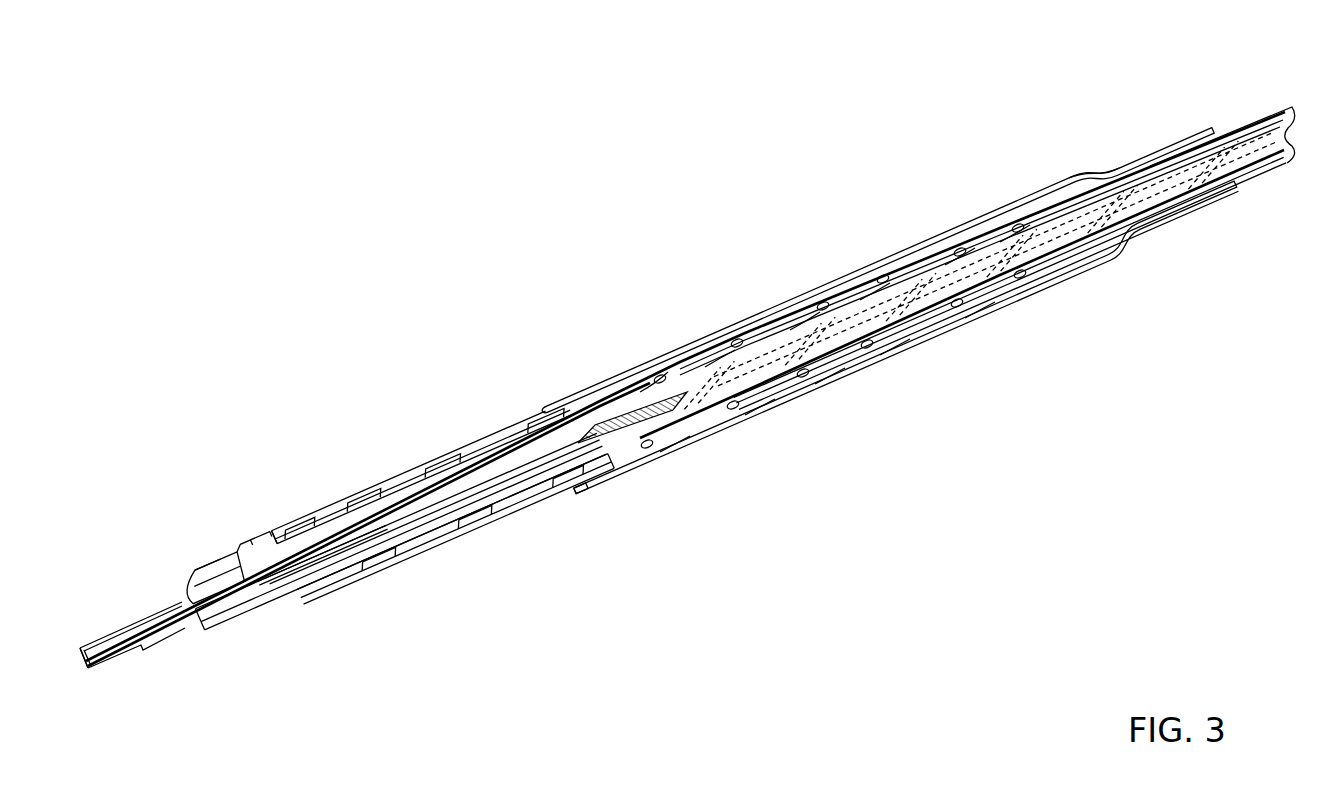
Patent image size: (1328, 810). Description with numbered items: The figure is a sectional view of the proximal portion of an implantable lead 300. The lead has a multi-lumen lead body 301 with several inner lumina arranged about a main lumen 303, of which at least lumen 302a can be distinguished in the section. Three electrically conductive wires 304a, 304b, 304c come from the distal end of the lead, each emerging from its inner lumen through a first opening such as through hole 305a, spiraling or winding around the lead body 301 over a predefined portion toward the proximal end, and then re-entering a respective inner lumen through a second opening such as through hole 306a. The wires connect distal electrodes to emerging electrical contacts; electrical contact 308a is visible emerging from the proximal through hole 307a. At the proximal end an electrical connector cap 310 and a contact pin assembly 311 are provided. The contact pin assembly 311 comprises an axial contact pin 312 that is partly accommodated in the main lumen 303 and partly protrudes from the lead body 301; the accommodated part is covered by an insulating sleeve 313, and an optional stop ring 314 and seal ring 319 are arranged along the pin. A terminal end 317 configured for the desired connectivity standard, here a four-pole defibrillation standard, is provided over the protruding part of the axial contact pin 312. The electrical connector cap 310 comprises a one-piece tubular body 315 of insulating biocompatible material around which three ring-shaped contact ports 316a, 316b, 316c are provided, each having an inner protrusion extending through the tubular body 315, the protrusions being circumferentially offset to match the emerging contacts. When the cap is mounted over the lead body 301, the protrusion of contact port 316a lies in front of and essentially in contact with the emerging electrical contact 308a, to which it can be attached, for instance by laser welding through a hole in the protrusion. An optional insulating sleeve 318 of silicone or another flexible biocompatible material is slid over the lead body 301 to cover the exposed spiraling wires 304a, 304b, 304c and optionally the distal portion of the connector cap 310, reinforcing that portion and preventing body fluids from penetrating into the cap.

The implantable lead 300 is at (1004, 415).
The multi-lumen lead body 301 is at (1262, 178).
The lumen 302a is at (1240, 122).
The main lumen 303 is at (818, 333).
The electrically conductive wire 304a is at (482, 466).
The electrically conductive wire 304b is at (735, 340).
The electrically conductive wire 304c is at (658, 375).
The first opening or through hole 305a is at (1086, 181).
The second opening or through hole 306a is at (597, 402).
The proximal opening or through hole 307a is at (252, 532).
The electrical contact 308a is at (252, 538).
The electrical connector cap 310 is at (213, 632).
The contact pin assembly 311 is at (276, 580).
The axial contact pin 312 is at (105, 668).
The insulating sleeve 313 is at (265, 592).
The stop ring 314 is at (195, 572).
The tubular body 315 is at (527, 502).
The ring-shaped contact port 316a is at (298, 525).
The ring-shaped contact port 316b is at (378, 573).
The ring-shaped contact port 316c is at (460, 456).
The terminal end 317 is at (135, 625).
The insulating sleeve 318 is at (620, 457).
The seal ring 319 is at (188, 588).